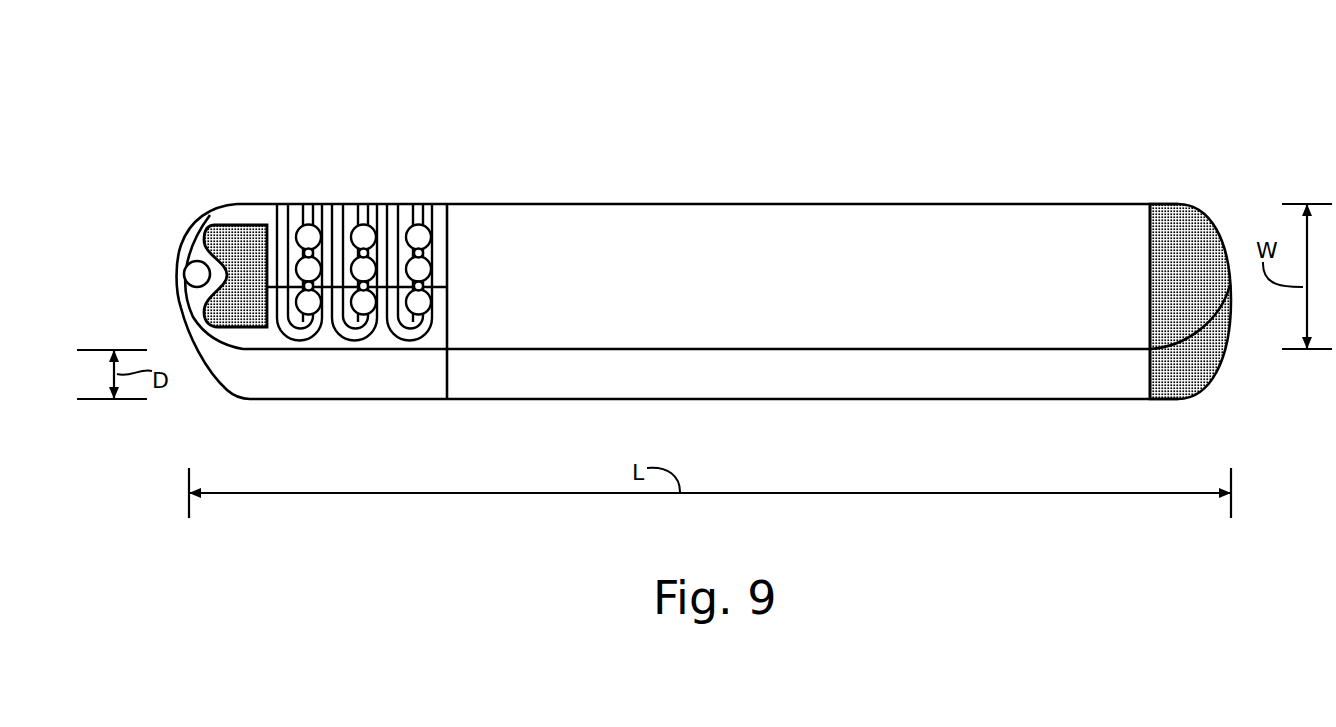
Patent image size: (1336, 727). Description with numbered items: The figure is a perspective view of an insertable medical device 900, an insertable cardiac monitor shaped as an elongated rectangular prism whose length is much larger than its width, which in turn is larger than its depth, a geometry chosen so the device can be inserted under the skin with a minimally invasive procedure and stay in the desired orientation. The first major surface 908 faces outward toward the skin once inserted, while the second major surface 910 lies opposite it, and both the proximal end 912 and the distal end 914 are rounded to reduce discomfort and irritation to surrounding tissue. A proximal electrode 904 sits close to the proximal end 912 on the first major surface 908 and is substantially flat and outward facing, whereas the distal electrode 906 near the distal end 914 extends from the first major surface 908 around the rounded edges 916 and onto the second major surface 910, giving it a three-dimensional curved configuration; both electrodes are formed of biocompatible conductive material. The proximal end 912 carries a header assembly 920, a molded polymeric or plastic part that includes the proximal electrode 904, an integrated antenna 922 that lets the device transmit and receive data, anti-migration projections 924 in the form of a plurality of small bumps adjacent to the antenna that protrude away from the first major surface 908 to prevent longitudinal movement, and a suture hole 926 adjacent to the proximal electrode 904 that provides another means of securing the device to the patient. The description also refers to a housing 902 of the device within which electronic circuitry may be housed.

The insertable medical device 900 is at (158, 106).
The housing 902 is at (1089, 196).
The proximal electrode 904 is at (238, 226).
The distal electrode 906 is at (1213, 342).
The first major surface 908 is at (795, 240).
The second major surface 910 is at (871, 400).
The proximal end 912 is at (205, 208).
The distal end 914 is at (1196, 204).
The rounded edges 916 is at (198, 388).
The header assembly 920 is at (331, 408).
The integrated antenna 922 is at (392, 208).
The anti-migration projections 924 is at (422, 269).
The suture hole 926 is at (196, 275).